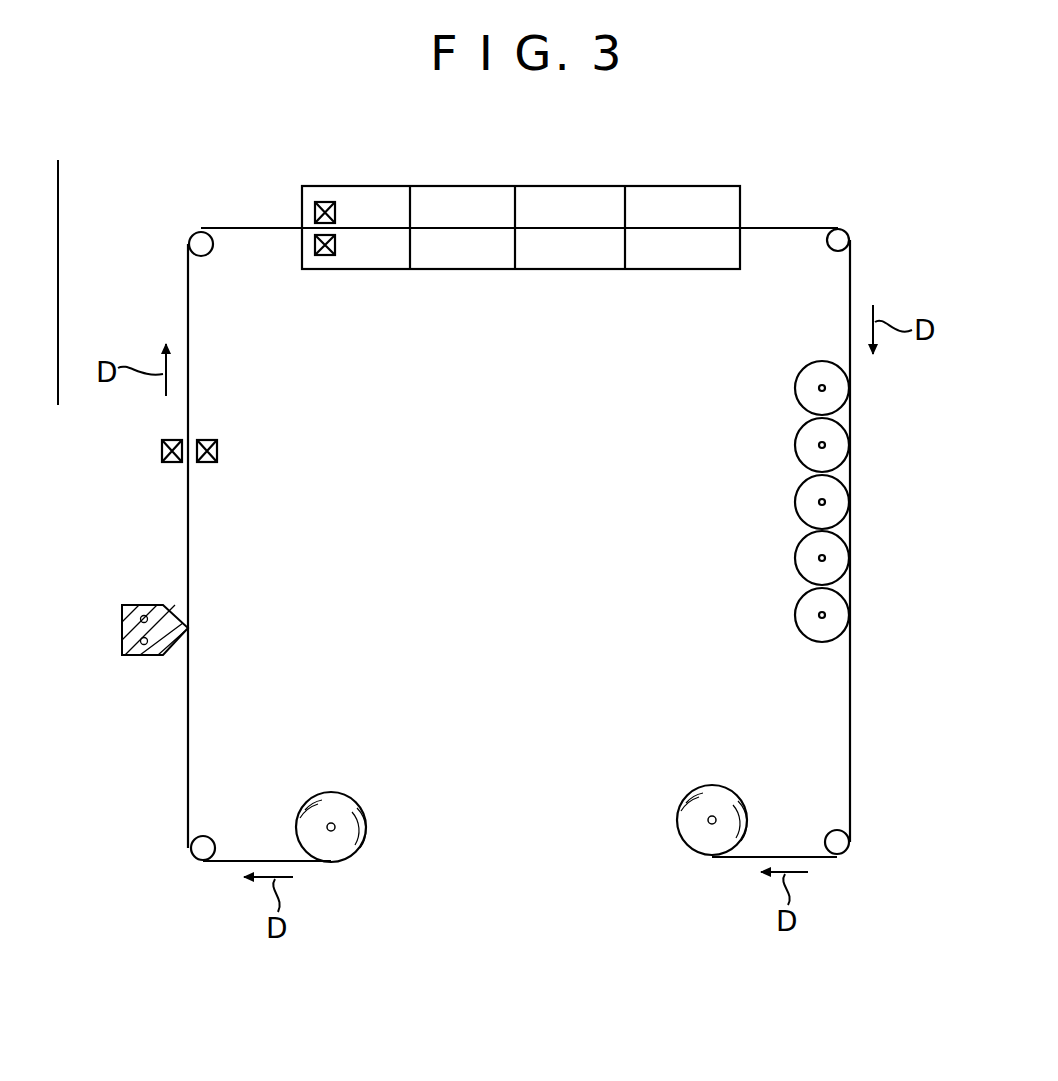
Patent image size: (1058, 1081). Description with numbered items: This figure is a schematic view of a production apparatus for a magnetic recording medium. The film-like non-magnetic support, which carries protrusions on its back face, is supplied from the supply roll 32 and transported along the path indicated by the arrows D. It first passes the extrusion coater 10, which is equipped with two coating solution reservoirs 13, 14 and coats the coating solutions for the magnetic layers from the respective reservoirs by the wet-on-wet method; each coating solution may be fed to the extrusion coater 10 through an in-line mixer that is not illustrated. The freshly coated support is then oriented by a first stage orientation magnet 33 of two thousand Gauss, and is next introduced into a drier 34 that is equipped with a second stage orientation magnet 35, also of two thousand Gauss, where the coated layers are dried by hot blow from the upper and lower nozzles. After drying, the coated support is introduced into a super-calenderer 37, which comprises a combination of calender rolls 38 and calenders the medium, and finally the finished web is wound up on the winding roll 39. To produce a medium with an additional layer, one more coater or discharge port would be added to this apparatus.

The extrusion coater 10 is at (155, 600).
The coating solution reservoir 13 is at (140, 652).
The coating solution reservoir 14 is at (140, 607).
The supply roll 32 is at (336, 824).
The first stage orientation magnet 33 is at (218, 452).
The drier 34 is at (451, 274).
The second stage orientation magnet 35 is at (325, 258).
The super-calenderer 37 is at (757, 501).
The calender rolls 38 is at (812, 381).
The winding roll 39 is at (710, 817).